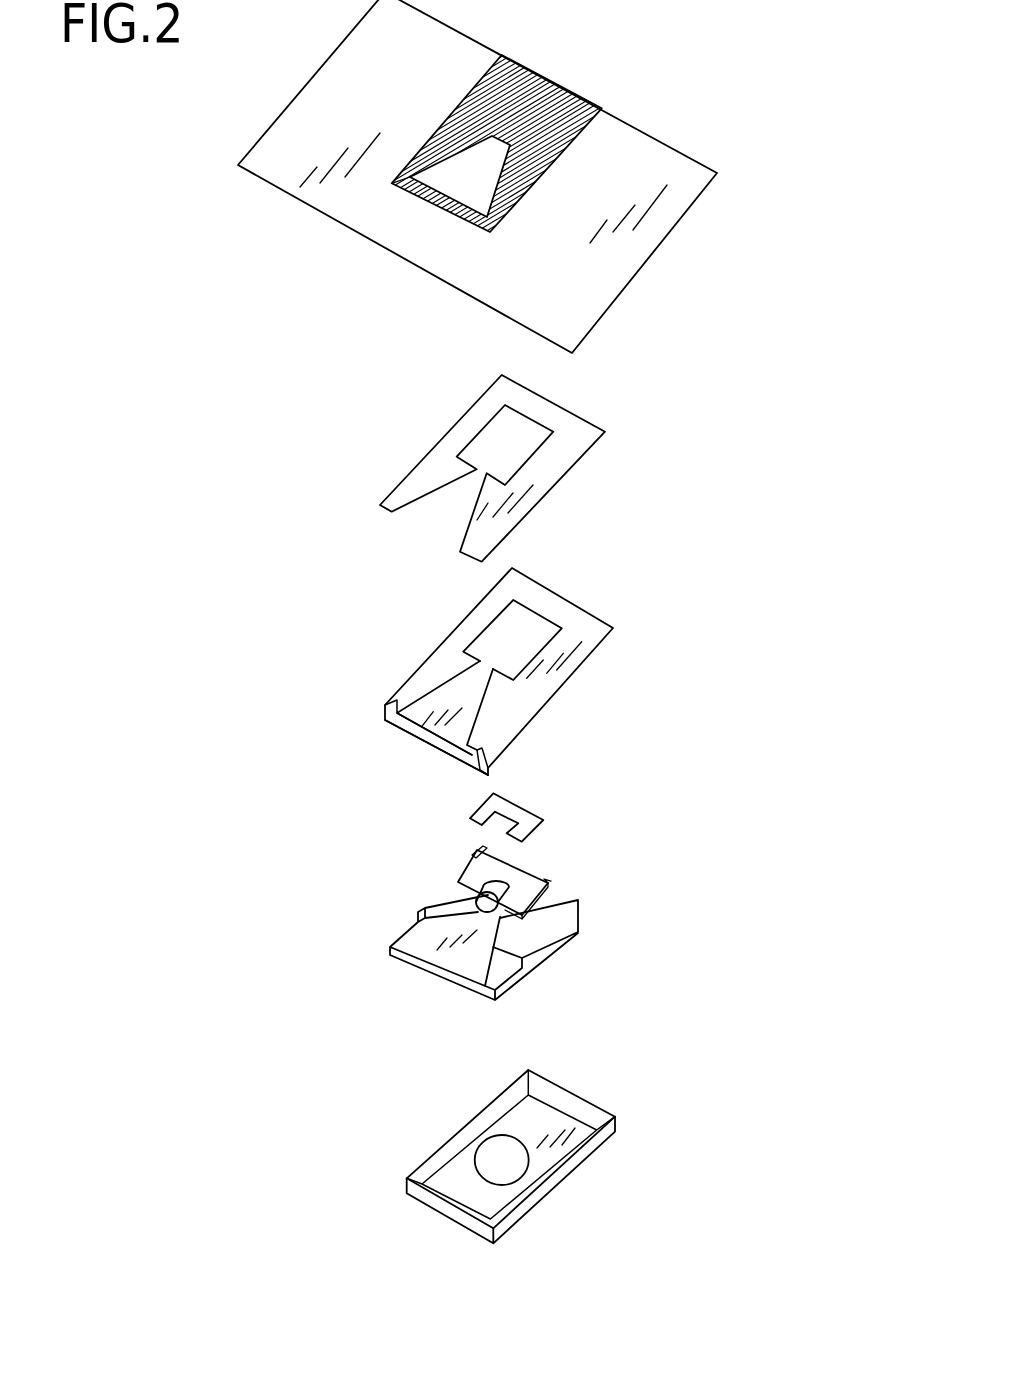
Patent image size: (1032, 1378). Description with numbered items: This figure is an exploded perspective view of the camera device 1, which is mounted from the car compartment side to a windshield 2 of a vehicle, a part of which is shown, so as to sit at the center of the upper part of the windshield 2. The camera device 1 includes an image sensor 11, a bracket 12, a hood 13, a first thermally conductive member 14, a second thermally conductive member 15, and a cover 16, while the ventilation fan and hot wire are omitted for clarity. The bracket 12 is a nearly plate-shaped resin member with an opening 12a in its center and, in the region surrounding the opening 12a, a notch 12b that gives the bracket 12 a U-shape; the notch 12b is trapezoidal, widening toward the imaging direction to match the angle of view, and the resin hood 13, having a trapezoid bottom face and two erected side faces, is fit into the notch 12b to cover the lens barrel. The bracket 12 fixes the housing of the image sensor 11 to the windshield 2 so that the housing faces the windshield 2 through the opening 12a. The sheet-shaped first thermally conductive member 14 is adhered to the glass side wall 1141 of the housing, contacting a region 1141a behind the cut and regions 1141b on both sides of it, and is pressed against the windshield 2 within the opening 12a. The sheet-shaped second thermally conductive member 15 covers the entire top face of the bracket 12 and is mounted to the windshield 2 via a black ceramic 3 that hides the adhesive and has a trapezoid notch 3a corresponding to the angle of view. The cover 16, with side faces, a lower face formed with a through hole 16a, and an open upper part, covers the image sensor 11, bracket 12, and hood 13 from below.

The camera device 1 is at (796, 719).
The windshield 2 is at (686, 129).
The black ceramic 3 is at (532, 90).
The trapezoid notch 3a is at (463, 168).
The second thermally conductive member 15 is at (594, 407).
The bracket 12 is at (594, 578).
The opening 12a is at (498, 640).
The notch 12b is at (443, 712).
The hood 13 is at (457, 717).
The first thermally conductive member 14 is at (463, 797).
The image sensor 11 is at (578, 875).
The glass side wall 1141 is at (463, 888).
The region 1141a is at (507, 875).
The regions 1141b is at (482, 873).
The cover 16 is at (593, 1073).
The through hole 16a is at (497, 1152).